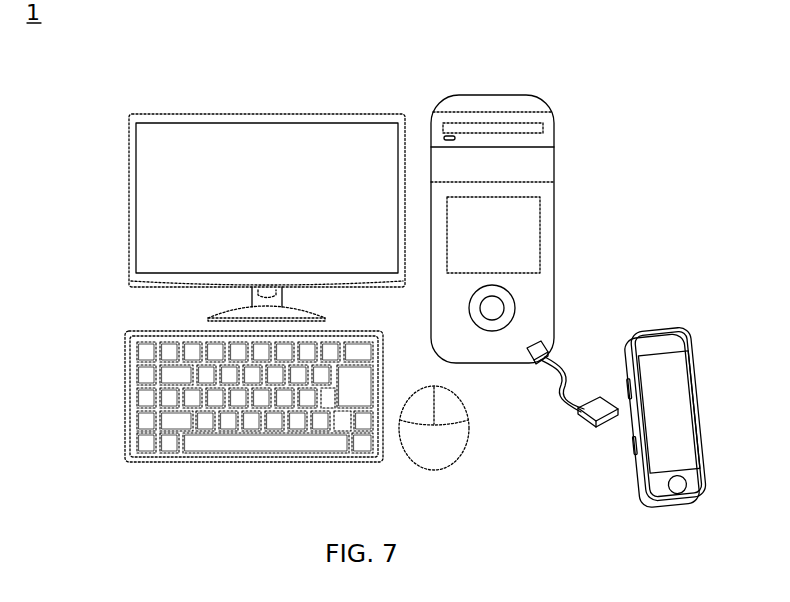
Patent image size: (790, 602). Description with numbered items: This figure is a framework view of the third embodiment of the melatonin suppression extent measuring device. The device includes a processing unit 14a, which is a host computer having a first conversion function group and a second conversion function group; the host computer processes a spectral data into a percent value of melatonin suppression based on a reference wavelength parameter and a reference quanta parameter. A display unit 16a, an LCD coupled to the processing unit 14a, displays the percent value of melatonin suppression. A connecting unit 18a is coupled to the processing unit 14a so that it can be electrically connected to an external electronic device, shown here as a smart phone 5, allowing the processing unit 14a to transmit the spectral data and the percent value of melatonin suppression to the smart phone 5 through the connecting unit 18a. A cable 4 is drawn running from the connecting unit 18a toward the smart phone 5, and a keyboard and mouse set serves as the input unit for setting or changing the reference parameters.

The display unit 16a is at (150, 160).
The processing unit 14a is at (545, 160).
The connecting unit 18a is at (536, 352).
The cable 4 is at (559, 378).
The smart phone 5 is at (695, 334).